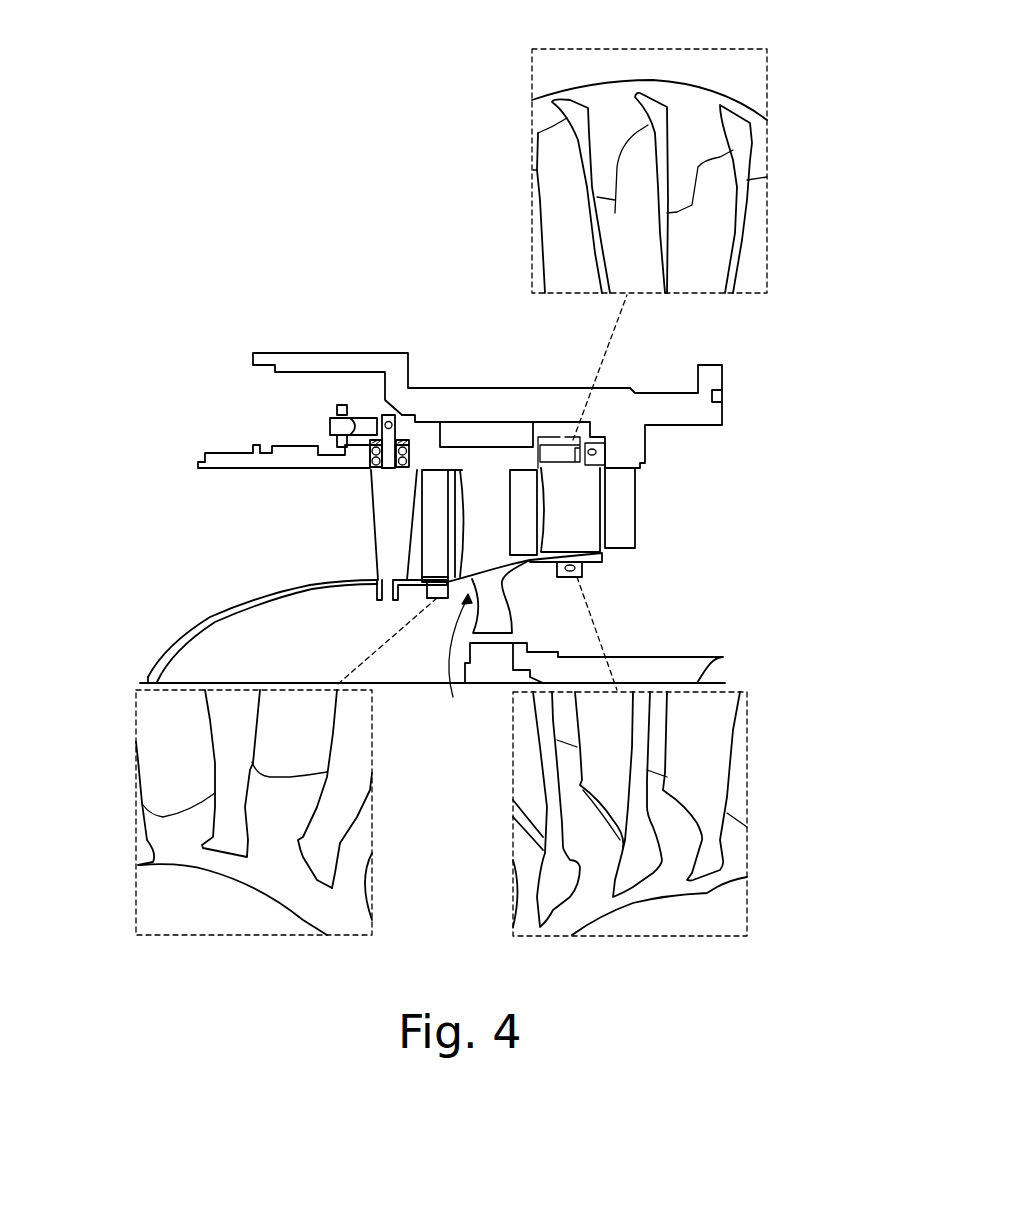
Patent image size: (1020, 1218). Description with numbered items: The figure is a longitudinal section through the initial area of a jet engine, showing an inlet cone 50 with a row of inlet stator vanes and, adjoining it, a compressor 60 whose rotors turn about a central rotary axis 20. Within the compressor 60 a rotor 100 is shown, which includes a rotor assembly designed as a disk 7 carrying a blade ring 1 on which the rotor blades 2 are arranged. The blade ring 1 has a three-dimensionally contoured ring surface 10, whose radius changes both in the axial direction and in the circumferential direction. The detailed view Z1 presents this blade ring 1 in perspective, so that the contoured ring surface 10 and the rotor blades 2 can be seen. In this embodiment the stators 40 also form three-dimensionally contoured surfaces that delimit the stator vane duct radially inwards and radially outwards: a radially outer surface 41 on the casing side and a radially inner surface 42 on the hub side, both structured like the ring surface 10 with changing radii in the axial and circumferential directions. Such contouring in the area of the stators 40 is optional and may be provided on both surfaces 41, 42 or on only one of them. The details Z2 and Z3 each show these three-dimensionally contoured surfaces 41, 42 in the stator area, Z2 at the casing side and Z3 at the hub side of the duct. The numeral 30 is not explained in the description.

The blade ring 1 is at (489, 563).
The rotor blades 2 is at (470, 498).
The disk 7 is at (493, 605).
The ring surface 10 is at (275, 853).
The rotary axis 20 is at (723, 657).
The stator of electric machine 30 is at (493, 455).
The stators 40 is at (587, 508).
The radially outer surface 41 is at (700, 110).
The radially inner surface 42 is at (581, 547).
The inlet cone 50 is at (205, 623).
The compressor 60 is at (650, 537).
The rotor 100 is at (438, 665).
The detailed view Z1 is at (133, 893).
The detail Z2 is at (768, 87).
The detail Z3 is at (747, 898).